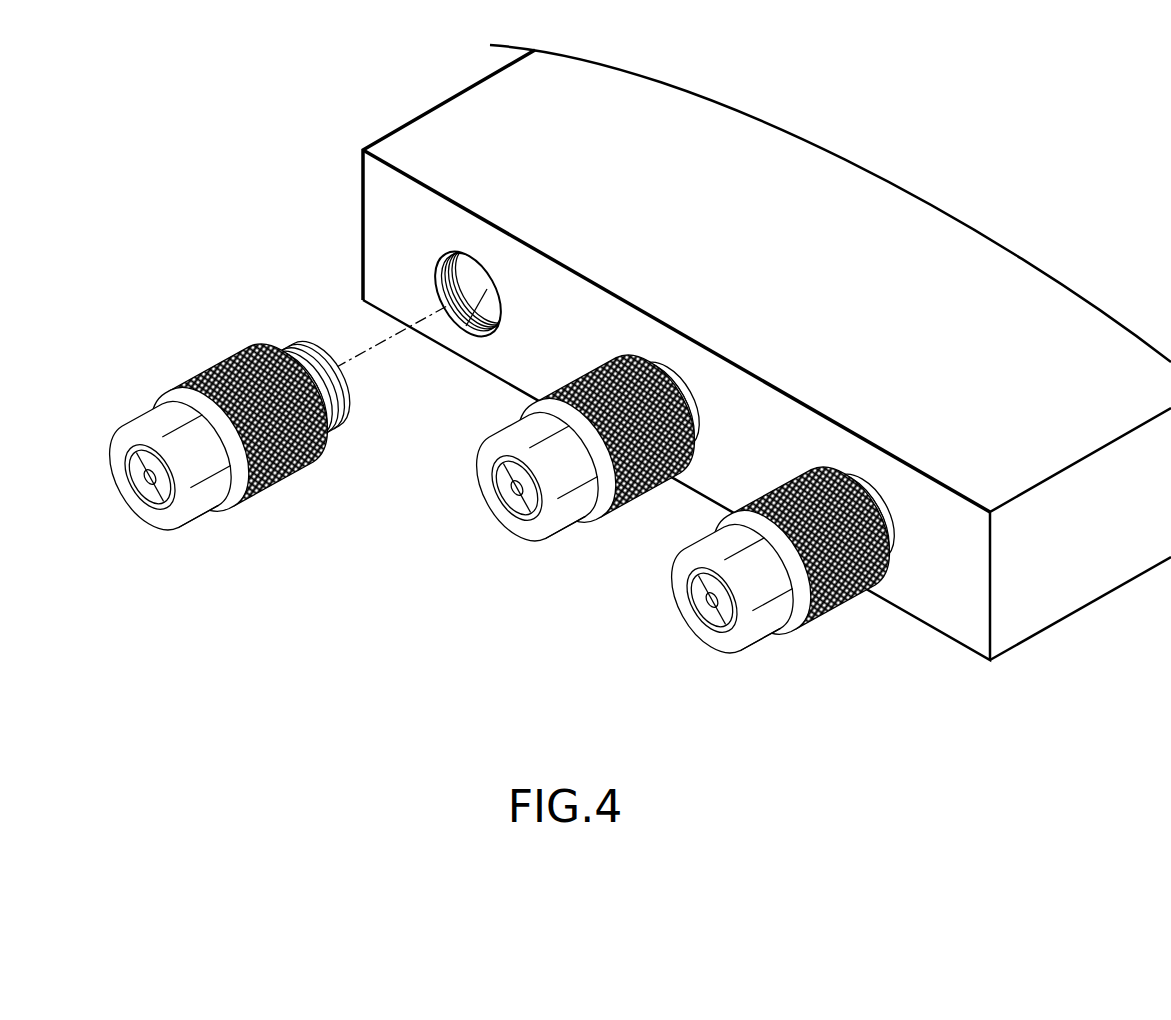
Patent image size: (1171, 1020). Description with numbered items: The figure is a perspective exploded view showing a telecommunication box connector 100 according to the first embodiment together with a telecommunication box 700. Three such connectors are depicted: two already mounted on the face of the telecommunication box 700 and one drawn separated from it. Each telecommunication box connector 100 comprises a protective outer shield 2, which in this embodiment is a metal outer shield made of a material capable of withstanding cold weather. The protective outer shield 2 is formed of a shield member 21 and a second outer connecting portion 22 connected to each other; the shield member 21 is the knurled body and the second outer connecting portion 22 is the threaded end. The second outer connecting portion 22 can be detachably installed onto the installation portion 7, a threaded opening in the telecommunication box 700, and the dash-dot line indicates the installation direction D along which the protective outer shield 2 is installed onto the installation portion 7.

The telecommunication box connector 100 is at (502, 516).
The protective outer shield 2 is at (273, 450).
The shield member 21 is at (239, 446).
The second outer connecting portion 22 is at (346, 398).
The installation portion 7 is at (466, 326).
The installation direction D is at (377, 347).
The telecommunication box 700 is at (1067, 623).